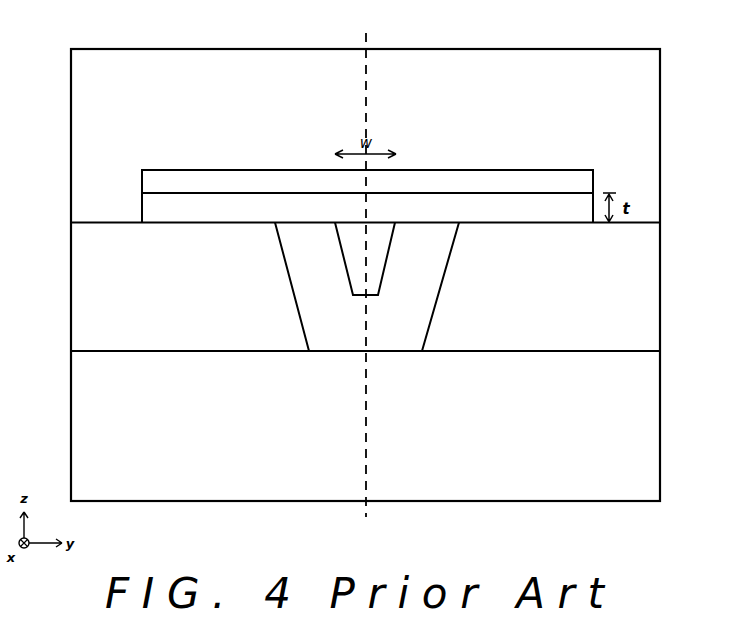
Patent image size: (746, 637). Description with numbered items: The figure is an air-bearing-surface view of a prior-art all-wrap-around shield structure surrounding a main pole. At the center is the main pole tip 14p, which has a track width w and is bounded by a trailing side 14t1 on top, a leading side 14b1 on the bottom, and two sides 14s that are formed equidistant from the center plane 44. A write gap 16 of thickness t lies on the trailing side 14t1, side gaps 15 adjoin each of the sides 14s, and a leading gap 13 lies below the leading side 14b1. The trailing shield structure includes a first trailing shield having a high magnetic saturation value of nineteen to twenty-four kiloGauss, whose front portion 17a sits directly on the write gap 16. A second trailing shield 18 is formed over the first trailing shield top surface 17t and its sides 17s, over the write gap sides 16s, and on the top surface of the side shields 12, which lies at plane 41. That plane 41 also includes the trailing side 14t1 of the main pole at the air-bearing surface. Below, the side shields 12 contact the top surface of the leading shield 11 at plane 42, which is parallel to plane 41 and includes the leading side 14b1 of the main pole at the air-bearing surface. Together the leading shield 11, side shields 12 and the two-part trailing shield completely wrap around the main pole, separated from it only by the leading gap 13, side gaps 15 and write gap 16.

The leading shield 11 is at (85, 414).
The side shields 12 is at (85, 307).
The leading gap 13 is at (324, 325).
The main pole tip 14p is at (375, 250).
The trailing side 14t1 is at (346, 221).
The leading side 14b1 is at (376, 296).
The sides 14s is at (382, 280).
The side gaps 15 is at (308, 240).
The write gap 16 is at (171, 209).
The write gap sides 16s is at (142, 210).
The front portion of first trailing shield 17a is at (198, 184).
The sides of first trailing shield 17s is at (142, 183).
The top surface of first trailing shield 17t is at (473, 170).
The second trailing shield 18 is at (650, 144).
The plane 41- 41 is at (678, 223).
The plane 42- 42 is at (678, 351).
The center plane 44- 44 is at (365, 276).